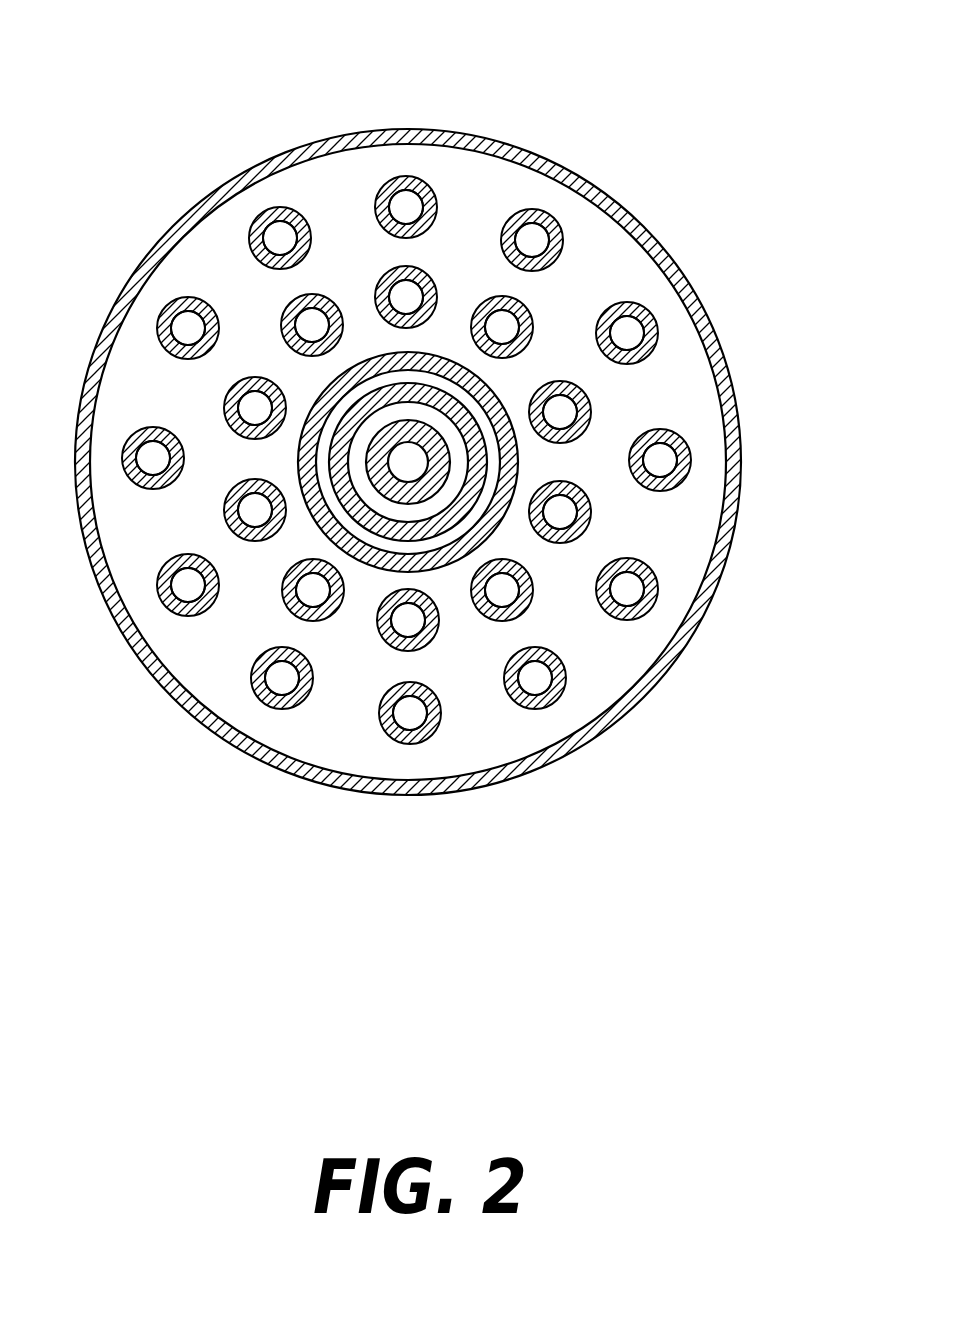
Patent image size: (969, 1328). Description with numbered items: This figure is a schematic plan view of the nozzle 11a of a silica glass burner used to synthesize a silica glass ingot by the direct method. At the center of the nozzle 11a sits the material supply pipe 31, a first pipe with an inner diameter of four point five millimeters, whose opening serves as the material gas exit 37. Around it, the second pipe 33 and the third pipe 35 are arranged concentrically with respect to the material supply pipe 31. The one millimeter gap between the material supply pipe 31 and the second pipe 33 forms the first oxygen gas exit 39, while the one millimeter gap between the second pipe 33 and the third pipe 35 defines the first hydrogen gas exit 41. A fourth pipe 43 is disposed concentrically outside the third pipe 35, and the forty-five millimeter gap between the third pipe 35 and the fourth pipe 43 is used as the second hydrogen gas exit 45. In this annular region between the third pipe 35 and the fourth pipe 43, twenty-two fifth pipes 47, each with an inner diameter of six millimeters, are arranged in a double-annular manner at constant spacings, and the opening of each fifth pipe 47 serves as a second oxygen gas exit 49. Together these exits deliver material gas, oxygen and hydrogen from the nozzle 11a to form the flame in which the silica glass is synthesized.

The nozzle 11a is at (392, 105).
The material supply pipe 31 is at (393, 503).
The second pipe 33 is at (412, 512).
The third pipe 35 is at (438, 528).
The material gas exit 37 is at (386, 460).
The first oxygen gas exit 39 is at (352, 546).
The first hydrogen gas exit 41 is at (357, 505).
The fourth pipe 43 is at (623, 717).
The second hydrogen gas exit 45 is at (307, 745).
The fifth pipe 47 is at (537, 327).
The second oxygen gas exit 49 is at (490, 320).